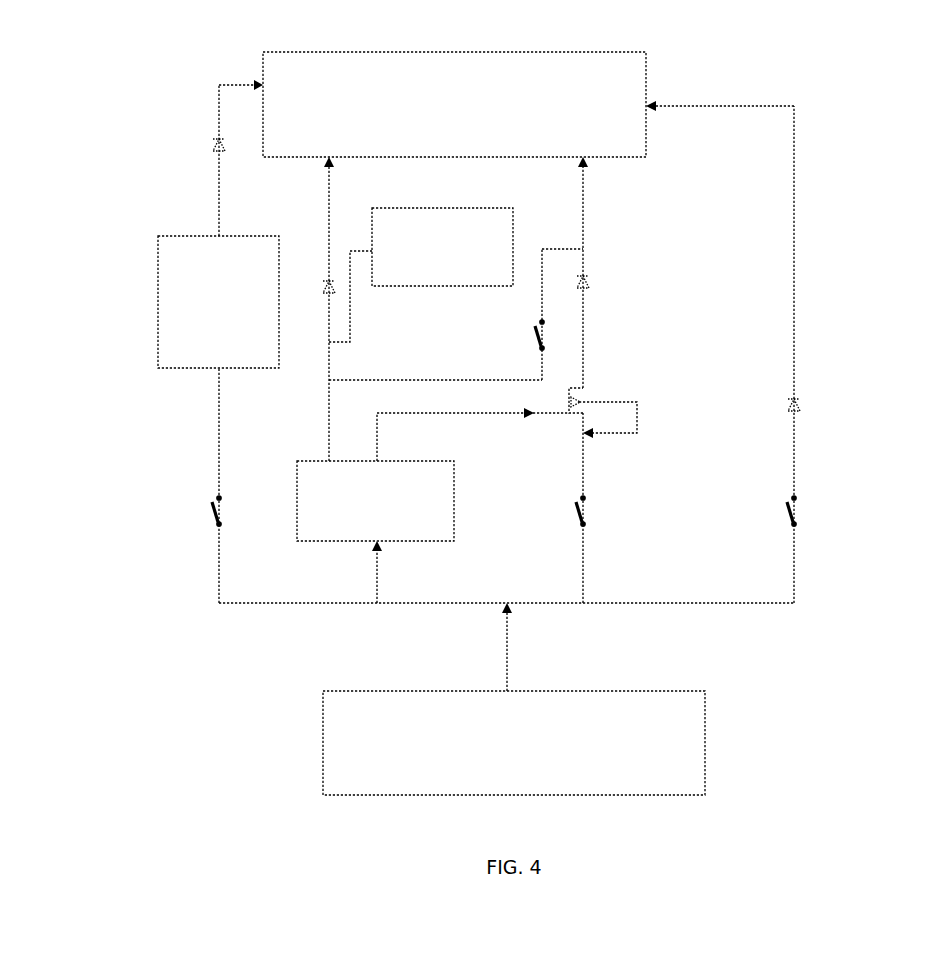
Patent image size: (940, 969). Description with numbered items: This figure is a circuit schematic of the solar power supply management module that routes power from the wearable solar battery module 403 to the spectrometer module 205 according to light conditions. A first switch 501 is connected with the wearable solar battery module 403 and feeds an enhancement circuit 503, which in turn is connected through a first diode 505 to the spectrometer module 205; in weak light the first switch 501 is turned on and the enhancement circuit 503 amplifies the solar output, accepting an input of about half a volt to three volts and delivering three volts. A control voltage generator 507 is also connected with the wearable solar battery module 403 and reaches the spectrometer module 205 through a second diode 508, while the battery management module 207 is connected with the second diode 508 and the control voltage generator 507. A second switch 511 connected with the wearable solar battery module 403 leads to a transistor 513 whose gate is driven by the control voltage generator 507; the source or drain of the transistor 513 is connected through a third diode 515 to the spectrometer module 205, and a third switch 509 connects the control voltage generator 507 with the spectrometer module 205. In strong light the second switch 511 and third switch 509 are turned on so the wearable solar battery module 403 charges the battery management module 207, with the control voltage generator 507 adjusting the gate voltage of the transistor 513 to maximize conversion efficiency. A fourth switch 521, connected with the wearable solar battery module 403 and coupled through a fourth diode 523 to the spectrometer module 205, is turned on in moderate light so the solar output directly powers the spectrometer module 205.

The spectrometer module 205 is at (632, 91).
The battery management module 207 is at (385, 240).
The wearable solar battery module 403 is at (695, 746).
The first switch 501 is at (197, 497).
The enhancement circuit 503 is at (218, 262).
The first diode 505 is at (212, 138).
The control voltage generator 507 is at (437, 525).
The second diode 508 is at (310, 306).
The third switch 509 is at (524, 336).
The second switch 511 is at (599, 516).
The transistor 513 is at (602, 391).
The third diode 515 is at (602, 264).
The fourth switch 521 is at (809, 516).
The fourth diode 523 is at (812, 386).